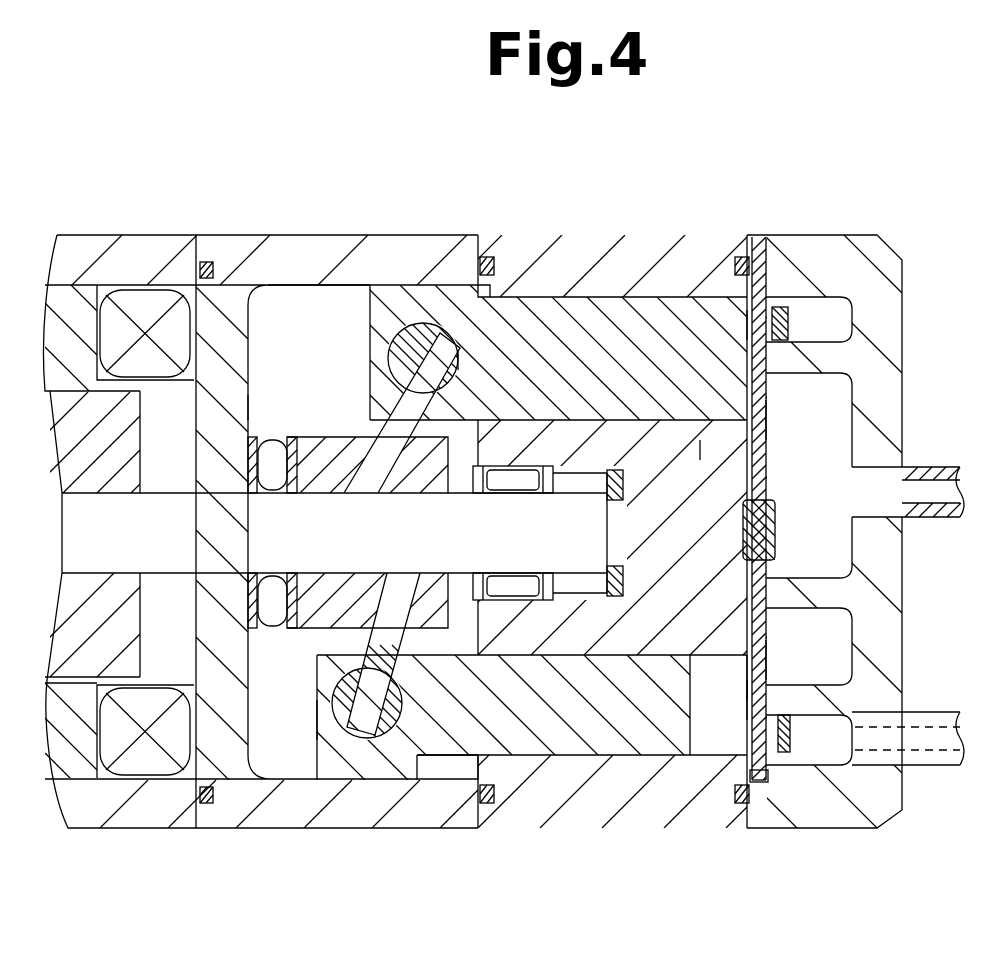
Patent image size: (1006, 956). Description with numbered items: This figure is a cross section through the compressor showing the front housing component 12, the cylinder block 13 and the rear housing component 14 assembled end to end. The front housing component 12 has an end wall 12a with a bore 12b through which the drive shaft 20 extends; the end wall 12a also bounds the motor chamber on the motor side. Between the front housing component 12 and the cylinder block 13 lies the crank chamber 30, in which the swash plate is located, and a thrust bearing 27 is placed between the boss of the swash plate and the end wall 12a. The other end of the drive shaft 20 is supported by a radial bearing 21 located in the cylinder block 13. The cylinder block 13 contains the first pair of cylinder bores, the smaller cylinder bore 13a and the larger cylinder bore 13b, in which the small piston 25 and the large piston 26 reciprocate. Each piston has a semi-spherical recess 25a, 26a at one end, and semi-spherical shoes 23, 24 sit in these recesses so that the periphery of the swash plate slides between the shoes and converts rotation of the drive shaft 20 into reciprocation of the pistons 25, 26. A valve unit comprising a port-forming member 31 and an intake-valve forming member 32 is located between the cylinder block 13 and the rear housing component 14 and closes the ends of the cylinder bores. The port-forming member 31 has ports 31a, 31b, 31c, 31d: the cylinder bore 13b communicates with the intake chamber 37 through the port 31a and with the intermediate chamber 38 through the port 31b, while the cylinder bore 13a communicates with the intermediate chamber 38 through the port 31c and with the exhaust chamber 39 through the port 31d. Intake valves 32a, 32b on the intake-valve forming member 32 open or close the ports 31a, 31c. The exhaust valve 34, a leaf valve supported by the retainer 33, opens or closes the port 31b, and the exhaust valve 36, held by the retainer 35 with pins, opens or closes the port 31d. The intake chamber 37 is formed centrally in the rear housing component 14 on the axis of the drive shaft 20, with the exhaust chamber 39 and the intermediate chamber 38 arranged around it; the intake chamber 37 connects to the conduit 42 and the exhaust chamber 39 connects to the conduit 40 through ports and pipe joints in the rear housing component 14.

The front housing component 12 is at (262, 243).
The end wall 12a is at (247, 405).
The bore 12b is at (232, 378).
The cylinder block 13 is at (637, 265).
The cylinder bore 13a is at (670, 752).
The cylinder bore 13b is at (500, 297).
The rear housing component 14 is at (850, 238).
The drive shaft 20 is at (172, 575).
The radial bearing 21 is at (510, 494).
The semi-spherical shoe 23 is at (400, 735).
The semi-spherical shoe 24 is at (388, 333).
The small piston 25 is at (560, 740).
The semi-spherical recess 25a is at (327, 722).
The large piston 26 is at (578, 300).
The semi-spherical recess 26a is at (462, 363).
The thrust bearing 27 is at (278, 437).
The crank chamber 30 is at (431, 768).
The port-forming member 31 is at (758, 262).
The port 31a is at (767, 420).
The port 31b is at (737, 323).
The port 31c is at (767, 657).
The port 31d is at (748, 698).
The intake-valve forming member 32 is at (748, 298).
The intake valve 32a is at (698, 465).
The intake valve 32b is at (752, 686).
The retainer 33 is at (790, 325).
The exhaust valve 34 is at (830, 300).
The retainer 35 is at (788, 760).
The exhaust valve 36 is at (759, 784).
The intake chamber 37 is at (816, 391).
The intermediate chamber 38 is at (815, 295).
The exhaust chamber 39 is at (826, 738).
The conduit 40 is at (940, 730).
The conduit 42 is at (937, 492).